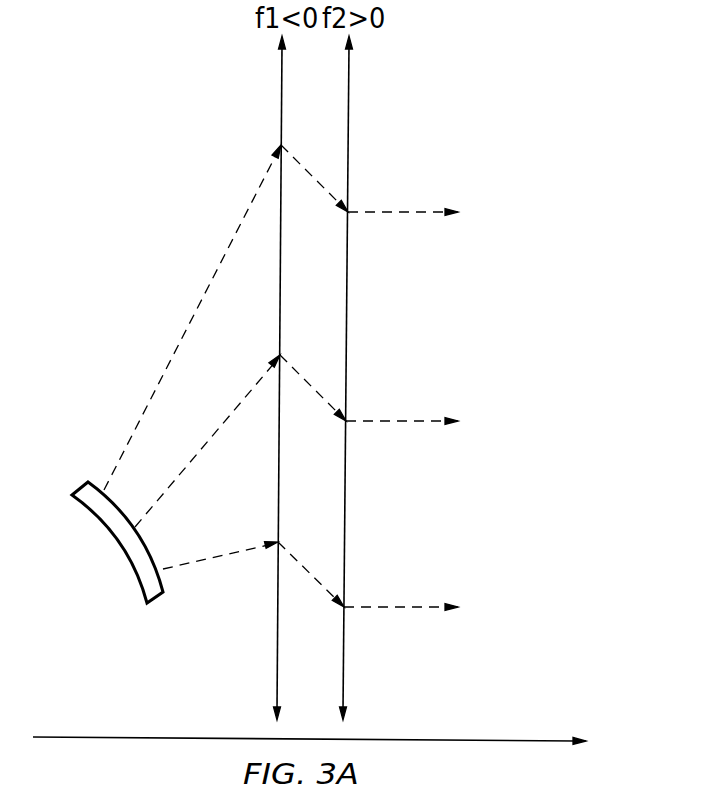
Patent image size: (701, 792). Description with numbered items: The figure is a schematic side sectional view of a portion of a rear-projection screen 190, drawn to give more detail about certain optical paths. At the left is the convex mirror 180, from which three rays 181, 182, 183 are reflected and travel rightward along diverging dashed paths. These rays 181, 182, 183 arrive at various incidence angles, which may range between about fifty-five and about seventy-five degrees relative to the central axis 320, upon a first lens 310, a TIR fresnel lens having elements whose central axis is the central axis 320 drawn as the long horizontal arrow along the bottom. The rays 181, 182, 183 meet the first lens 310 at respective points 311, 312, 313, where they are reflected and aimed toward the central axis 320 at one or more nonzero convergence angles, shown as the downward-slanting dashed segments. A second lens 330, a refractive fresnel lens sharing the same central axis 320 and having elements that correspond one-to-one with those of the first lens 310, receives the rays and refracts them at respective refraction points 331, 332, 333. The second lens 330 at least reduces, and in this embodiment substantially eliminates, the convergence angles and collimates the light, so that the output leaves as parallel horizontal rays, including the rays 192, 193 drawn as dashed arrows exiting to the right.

The convex mirror 180 is at (76, 489).
The ray 181 is at (188, 323).
The ray 182 is at (240, 400).
The ray 183 is at (221, 554).
The rear-projection screen 190 is at (250, 648).
The ray 192 is at (392, 424).
The ray 193 is at (392, 610).
The first lens 310 is at (281, 80).
The first lens point 311 is at (283, 144).
The first lens point 312 is at (282, 354).
The first lens point 313 is at (281, 541).
The central axis 320 is at (143, 737).
The second lens 330 is at (349, 80).
The refraction point 331 is at (350, 211).
The refraction point 332 is at (348, 420).
The refraction point 333 is at (346, 606).